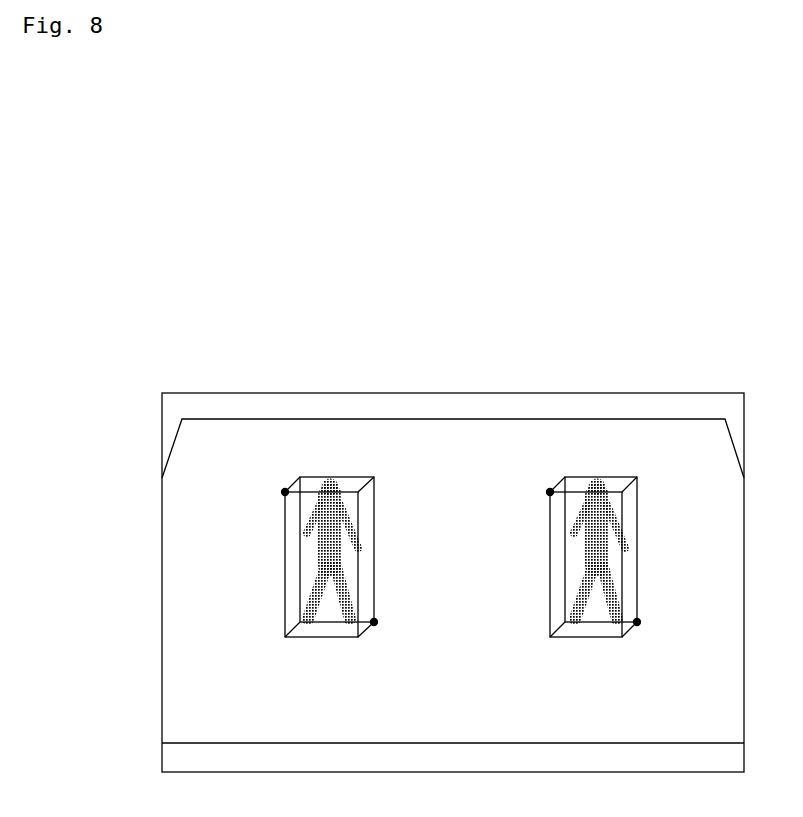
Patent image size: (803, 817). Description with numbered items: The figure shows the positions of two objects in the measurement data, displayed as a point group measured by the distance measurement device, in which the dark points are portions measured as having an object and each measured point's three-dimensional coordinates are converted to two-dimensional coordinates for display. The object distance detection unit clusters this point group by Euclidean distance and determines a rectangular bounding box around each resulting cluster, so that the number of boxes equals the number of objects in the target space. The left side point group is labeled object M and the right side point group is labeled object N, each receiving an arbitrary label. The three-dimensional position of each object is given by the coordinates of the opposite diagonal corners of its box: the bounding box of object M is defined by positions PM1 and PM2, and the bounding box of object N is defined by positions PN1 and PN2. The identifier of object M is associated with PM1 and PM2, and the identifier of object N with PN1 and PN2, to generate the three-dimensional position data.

The object M is at (332, 490).
The object N is at (599, 490).
The position PM1 is at (285, 492).
The position PM2 is at (374, 622).
The position PN1 is at (550, 492).
The position PN2 is at (637, 622).